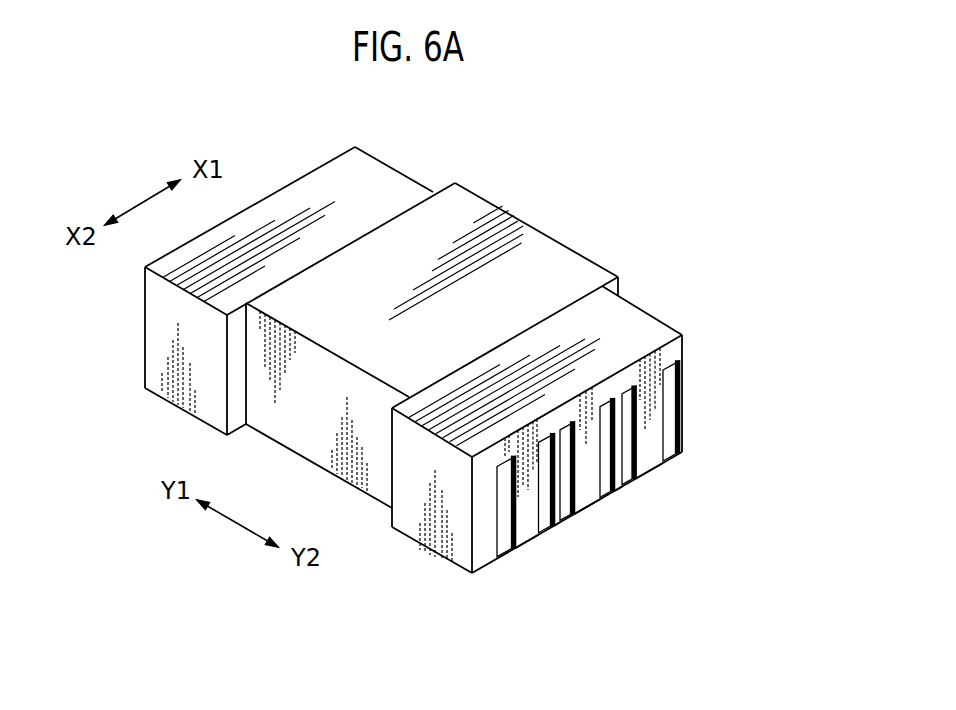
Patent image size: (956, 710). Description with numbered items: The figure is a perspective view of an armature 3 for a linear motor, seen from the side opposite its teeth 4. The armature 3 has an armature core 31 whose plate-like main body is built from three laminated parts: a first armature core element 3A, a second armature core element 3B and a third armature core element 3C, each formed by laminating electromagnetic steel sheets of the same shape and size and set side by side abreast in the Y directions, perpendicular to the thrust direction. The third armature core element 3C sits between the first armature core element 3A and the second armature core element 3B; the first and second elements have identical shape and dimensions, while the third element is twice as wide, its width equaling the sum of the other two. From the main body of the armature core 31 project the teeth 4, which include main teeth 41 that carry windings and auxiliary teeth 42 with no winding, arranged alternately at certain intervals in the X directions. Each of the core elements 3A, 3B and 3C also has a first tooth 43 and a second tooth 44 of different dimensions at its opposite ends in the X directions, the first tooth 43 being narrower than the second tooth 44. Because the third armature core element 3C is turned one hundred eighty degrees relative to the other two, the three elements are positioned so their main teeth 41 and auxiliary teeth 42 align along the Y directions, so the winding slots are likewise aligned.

The armature 3 is at (464, 367).
The first armature core element 3A is at (630, 325).
The second armature core element 3B is at (283, 190).
The third armature core element 3C is at (542, 243).
The armature core 31 is at (672, 355).
The teeth 4 is at (600, 501).
The main teeth 41 is at (527, 542).
The auxiliary teeth 42 is at (604, 544).
The first tooth 43 is at (676, 461).
The second tooth 44 is at (495, 552).